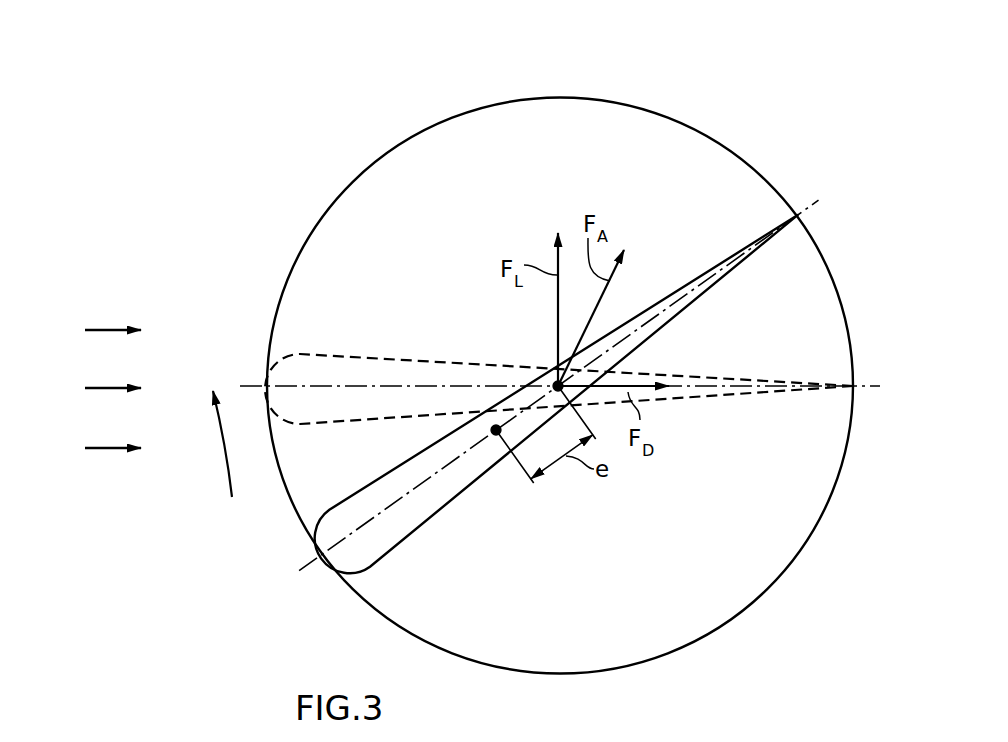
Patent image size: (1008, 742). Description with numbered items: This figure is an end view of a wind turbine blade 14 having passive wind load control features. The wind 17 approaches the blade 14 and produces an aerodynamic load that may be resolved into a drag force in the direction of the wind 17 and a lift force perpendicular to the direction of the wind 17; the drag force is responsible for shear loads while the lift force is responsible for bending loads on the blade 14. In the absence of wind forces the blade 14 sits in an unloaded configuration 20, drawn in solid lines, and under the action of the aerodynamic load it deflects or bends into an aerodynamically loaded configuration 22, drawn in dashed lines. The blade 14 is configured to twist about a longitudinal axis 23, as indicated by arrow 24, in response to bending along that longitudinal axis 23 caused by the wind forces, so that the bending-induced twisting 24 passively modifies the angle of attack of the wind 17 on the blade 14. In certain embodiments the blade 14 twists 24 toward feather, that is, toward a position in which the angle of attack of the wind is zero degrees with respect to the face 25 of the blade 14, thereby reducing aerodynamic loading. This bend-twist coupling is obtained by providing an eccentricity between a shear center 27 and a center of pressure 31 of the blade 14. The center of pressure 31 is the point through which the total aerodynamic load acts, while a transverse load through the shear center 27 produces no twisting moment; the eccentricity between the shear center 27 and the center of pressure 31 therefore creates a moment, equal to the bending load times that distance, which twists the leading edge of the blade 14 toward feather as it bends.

The wind turbine blade 14 is at (383, 146).
The wind 17 is at (108, 446).
The unloaded configuration 20 is at (740, 240).
The aerodynamically loaded configuration 22 is at (777, 401).
The longitudinal axis 23 is at (530, 384).
The arrow indicating twisting 24 is at (227, 488).
The face of the blade 25 is at (713, 288).
The shear center 27 is at (489, 434).
The center of pressure 31 is at (527, 389).